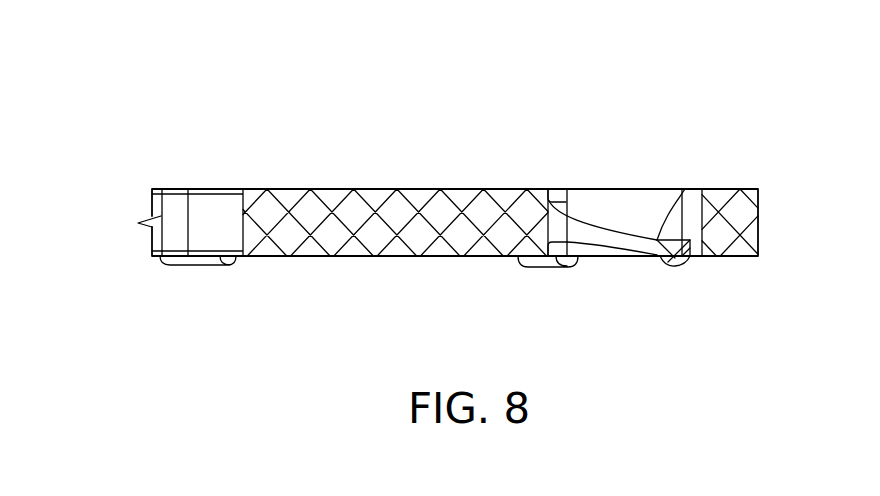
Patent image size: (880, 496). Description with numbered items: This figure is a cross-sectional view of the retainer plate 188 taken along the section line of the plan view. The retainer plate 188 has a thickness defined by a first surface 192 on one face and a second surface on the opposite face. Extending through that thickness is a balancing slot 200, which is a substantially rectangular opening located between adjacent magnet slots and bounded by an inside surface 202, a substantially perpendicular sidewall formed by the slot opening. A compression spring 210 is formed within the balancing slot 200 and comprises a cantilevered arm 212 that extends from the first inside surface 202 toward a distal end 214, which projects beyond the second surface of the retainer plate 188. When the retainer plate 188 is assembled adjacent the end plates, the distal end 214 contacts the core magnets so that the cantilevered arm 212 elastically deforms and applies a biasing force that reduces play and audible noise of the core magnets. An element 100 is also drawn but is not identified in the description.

The base substrate 100 is at (355, 256).
The retainer plate 188 is at (180, 147).
The first surface 192 is at (410, 189).
The balancing slot 200 is at (623, 177).
The inside surface 202 is at (563, 189).
The compression spring 210 is at (685, 189).
The cantilevered arm 212 is at (594, 228).
The distal end 214 is at (680, 265).